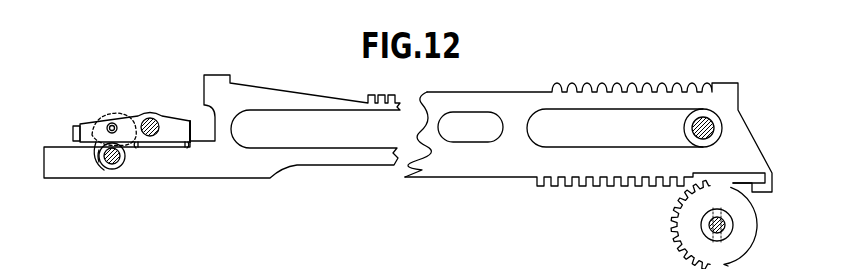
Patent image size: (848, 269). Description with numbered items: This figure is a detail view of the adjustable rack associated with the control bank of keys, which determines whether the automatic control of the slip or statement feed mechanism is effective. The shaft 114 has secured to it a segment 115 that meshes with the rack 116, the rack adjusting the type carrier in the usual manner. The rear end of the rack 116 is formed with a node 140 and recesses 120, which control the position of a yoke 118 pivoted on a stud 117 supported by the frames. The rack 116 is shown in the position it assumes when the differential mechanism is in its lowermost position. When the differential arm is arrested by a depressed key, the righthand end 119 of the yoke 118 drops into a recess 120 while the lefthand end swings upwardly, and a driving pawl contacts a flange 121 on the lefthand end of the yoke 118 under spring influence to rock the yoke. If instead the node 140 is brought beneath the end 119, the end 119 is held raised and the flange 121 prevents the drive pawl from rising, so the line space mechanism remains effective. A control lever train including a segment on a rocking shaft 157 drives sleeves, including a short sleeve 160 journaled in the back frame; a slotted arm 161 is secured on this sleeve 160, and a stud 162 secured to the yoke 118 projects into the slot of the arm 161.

The shaft 114 is at (722, 200).
The segment 115 is at (746, 216).
The rack 116 is at (491, 92).
The stud 117 is at (152, 118).
The yoke 118 is at (188, 114).
The righthand end 119 is at (190, 145).
The recesses 120 is at (138, 149).
The flange 121 is at (76, 126).
The node 140 is at (150, 148).
The rocking shaft 157 is at (99, 157).
The short sleeve 160 is at (101, 165).
The slotted arm 161 is at (118, 114).
The stud 162 is at (116, 118).